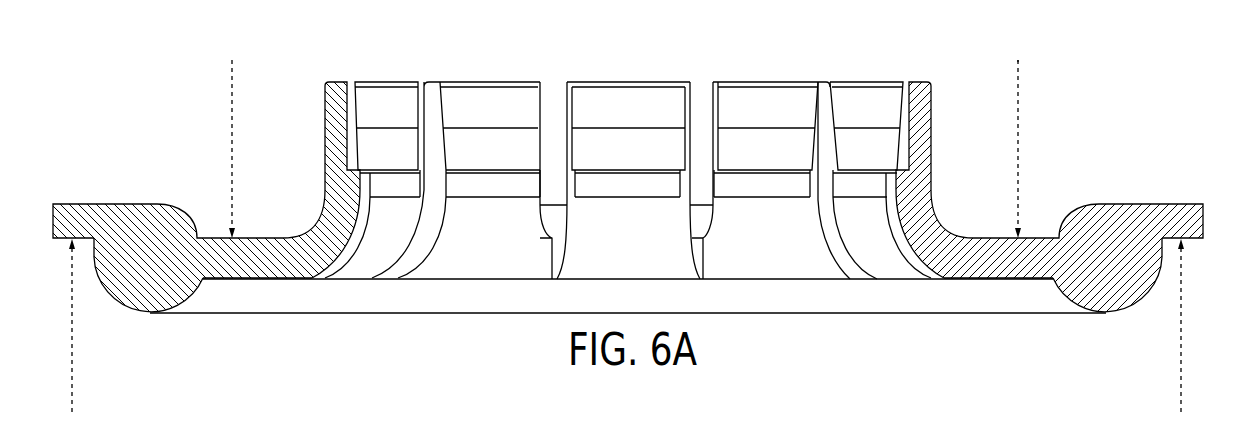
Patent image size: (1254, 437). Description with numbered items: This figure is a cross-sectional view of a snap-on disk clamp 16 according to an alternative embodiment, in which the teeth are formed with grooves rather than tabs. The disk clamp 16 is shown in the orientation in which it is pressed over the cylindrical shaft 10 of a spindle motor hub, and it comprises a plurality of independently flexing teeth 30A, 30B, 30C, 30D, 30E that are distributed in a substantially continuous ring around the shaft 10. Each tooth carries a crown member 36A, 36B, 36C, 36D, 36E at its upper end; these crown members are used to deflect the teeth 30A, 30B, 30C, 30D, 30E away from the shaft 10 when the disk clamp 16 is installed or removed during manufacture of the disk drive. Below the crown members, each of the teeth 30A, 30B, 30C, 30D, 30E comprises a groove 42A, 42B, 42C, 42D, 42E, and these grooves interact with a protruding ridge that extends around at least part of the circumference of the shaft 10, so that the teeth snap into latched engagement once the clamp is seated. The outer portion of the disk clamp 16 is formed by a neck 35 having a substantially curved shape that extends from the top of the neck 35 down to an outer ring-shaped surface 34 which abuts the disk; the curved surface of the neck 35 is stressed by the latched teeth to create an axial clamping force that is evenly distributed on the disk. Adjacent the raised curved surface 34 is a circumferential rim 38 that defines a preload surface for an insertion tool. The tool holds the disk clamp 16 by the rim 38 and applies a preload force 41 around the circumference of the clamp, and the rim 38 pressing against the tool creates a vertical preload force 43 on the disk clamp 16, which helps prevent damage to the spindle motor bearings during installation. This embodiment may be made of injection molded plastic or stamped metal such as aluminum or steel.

The cylindrical shaft 10 is at (638, 436).
The disk clamp 16 is at (1110, 78).
The tooth 30A is at (376, 82).
The tooth 30B is at (486, 82).
The tooth 30C is at (632, 82).
The tooth 30D is at (773, 82).
The tooth 30E is at (875, 82).
The crown member 36A is at (374, 121).
The crown member 36B is at (477, 121).
The crown member 36C is at (619, 121).
The crown member 36D is at (756, 121).
The crown member 36E is at (854, 121).
The groove 42A is at (374, 164).
The groove 42B is at (477, 164).
The groove 42C is at (619, 164).
The groove 42D is at (756, 164).
The groove 42E is at (854, 164).
The outer ring-shaped surface 34 is at (150, 325).
The neck 35 is at (325, 175).
The circumferential rim 38 is at (60, 249).
The preload force 41 is at (232, 132).
The vertical preload force 43 is at (72, 352).